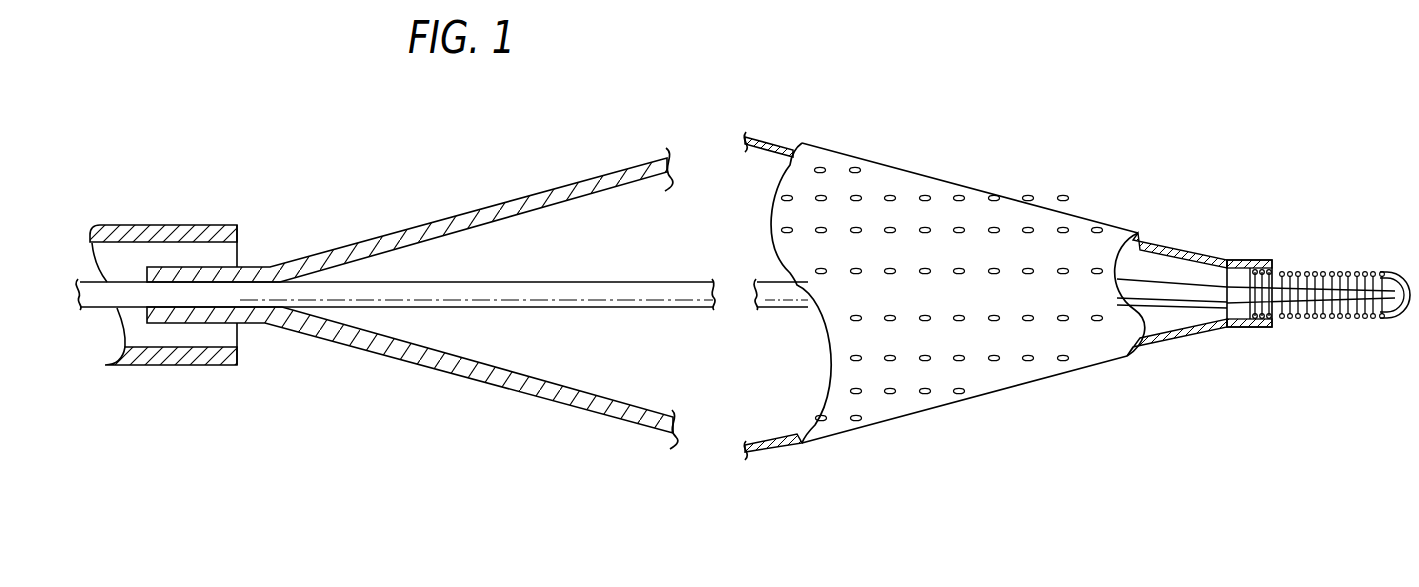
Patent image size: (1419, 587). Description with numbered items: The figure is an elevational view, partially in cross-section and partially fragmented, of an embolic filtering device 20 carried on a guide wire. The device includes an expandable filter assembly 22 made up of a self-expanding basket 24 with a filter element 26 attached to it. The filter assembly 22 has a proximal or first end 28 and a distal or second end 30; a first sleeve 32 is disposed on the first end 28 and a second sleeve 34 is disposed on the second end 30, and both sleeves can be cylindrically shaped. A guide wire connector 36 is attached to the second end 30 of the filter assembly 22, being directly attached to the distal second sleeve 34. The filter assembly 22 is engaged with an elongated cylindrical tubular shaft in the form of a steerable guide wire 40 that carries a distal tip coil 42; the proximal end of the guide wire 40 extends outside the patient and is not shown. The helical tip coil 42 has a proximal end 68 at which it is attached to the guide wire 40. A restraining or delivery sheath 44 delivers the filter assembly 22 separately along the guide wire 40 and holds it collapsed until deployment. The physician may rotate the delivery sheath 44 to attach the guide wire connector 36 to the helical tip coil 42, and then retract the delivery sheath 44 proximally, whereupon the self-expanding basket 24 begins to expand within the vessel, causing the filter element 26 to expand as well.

The embolic filtering device 20 is at (1052, 157).
The expandable filter assembly 22 is at (1018, 375).
The self-expanding basket 24 is at (412, 208).
The filter element 26 is at (903, 186).
The first end 28 is at (285, 310).
The second end 30 is at (1233, 260).
The first sleeve 32 is at (209, 315).
The second sleeve 34 is at (1245, 328).
The guide wire connector 36 is at (1266, 277).
The guide wire 40 is at (98, 298).
The tip coil 42 is at (1352, 276).
The delivery sheath 44 is at (150, 237).
The proximal end 68 is at (1271, 306).